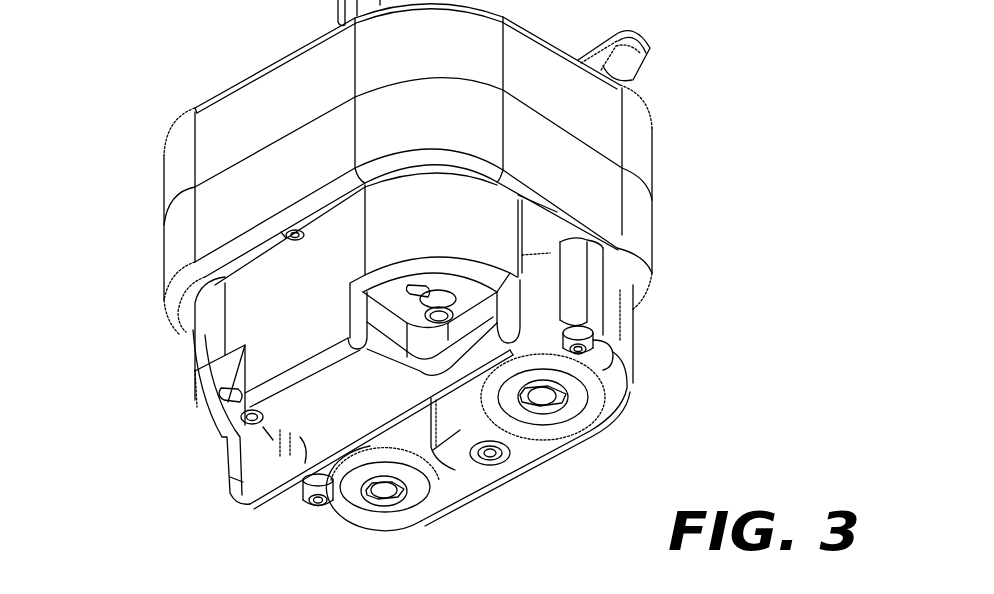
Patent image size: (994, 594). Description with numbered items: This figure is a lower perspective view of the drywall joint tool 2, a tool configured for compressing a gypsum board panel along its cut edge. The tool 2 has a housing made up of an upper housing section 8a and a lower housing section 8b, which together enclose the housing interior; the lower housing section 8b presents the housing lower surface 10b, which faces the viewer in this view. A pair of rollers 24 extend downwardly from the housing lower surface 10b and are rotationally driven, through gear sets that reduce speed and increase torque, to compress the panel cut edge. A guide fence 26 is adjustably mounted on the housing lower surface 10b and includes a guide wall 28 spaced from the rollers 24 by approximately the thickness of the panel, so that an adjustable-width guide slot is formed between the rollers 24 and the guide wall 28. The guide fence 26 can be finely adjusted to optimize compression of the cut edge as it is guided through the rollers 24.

The drywall joint tool 2 is at (168, 90).
The upper housing section 8a is at (652, 135).
The lower housing section 8b is at (652, 228).
The housing lower surface 10b is at (545, 245).
The rollers 24 is at (573, 420).
The guide fence 26 is at (230, 497).
The guide wall 28 is at (268, 485).